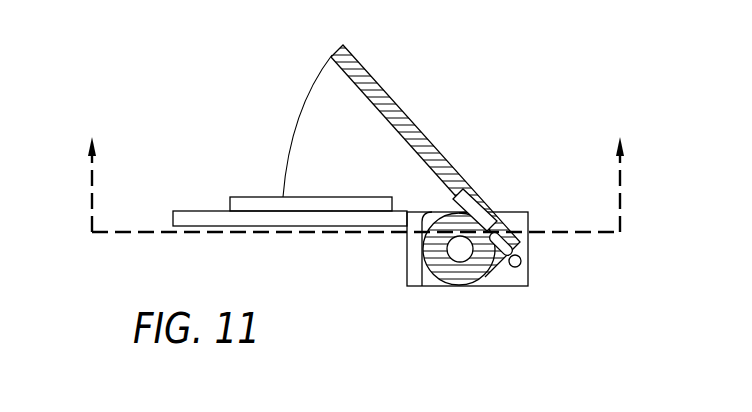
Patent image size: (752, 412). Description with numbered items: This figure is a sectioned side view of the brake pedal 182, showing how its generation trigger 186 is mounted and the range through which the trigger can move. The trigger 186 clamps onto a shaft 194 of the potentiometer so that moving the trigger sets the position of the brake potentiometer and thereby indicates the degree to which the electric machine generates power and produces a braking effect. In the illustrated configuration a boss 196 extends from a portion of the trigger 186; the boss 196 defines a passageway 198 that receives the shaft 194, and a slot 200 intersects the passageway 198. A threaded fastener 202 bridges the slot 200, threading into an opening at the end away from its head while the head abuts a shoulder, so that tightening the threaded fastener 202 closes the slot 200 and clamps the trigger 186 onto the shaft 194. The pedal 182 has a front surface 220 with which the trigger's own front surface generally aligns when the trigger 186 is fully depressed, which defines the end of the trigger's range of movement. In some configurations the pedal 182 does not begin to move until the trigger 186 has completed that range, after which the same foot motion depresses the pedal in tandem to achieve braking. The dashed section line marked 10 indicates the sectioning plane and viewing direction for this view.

The section line 10- 10 is at (363, 171).
The brake pedal 182 is at (203, 205).
The front surface 220 is at (258, 197).
The generation trigger 186 is at (397, 102).
The threaded fastener 202 is at (467, 212).
The slot 200 is at (500, 212).
The passageway 198 is at (440, 252).
The shaft 194 is at (462, 250).
The boss 196 is at (480, 272).